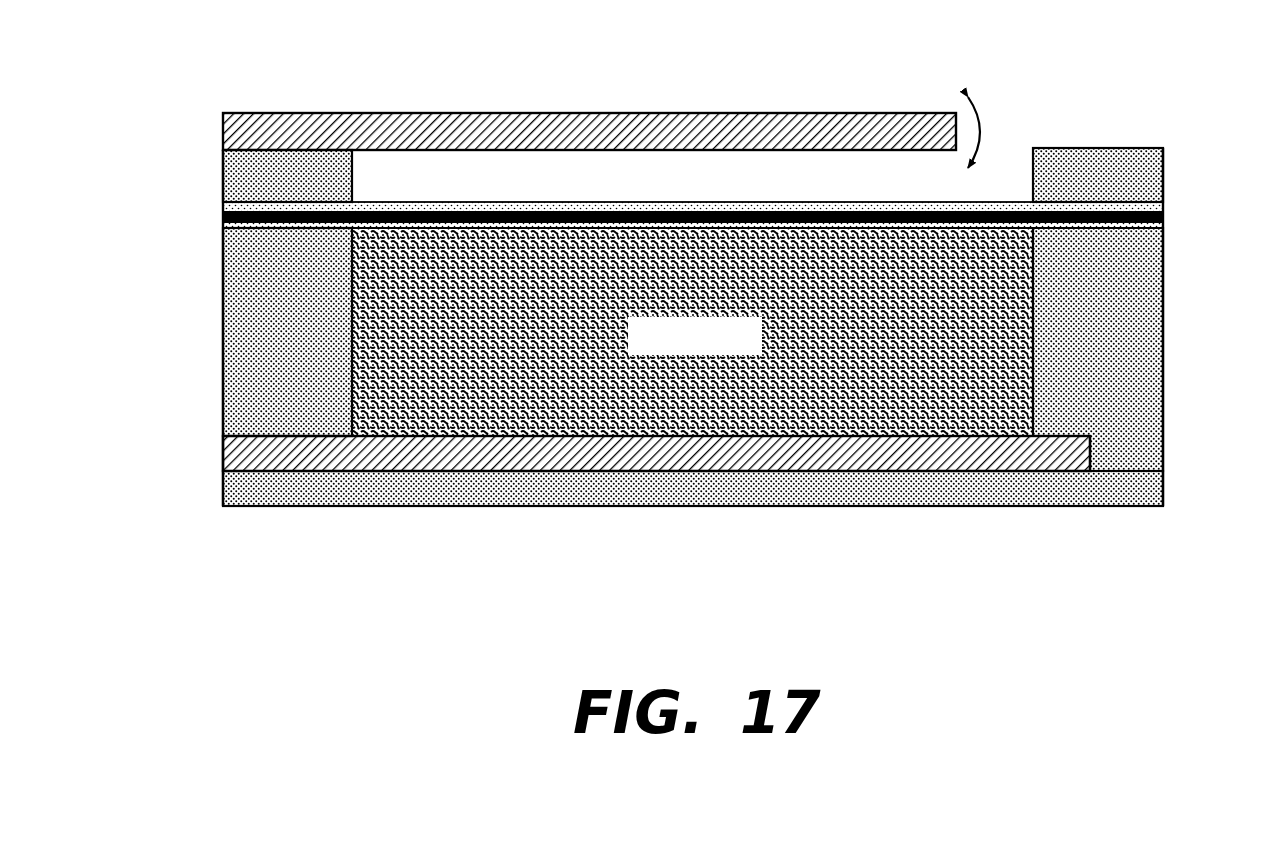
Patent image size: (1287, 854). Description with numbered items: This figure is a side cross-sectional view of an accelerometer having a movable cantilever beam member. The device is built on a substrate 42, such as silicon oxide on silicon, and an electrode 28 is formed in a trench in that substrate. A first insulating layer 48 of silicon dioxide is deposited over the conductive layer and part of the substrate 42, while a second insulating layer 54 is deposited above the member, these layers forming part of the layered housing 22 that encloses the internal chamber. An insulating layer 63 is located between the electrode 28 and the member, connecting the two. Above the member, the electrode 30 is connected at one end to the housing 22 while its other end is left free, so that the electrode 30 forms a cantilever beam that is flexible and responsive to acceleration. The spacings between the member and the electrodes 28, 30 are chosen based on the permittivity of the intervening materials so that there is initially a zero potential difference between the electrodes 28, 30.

The housing 22 is at (668, 260).
The electrode 30 is at (807, 117).
The second insulating layer 54 is at (237, 183).
The insulating layer 63 is at (1022, 272).
The first insulating layer 48 is at (238, 315).
The electrode 28 is at (1084, 455).
The substrate 42 is at (1148, 487).